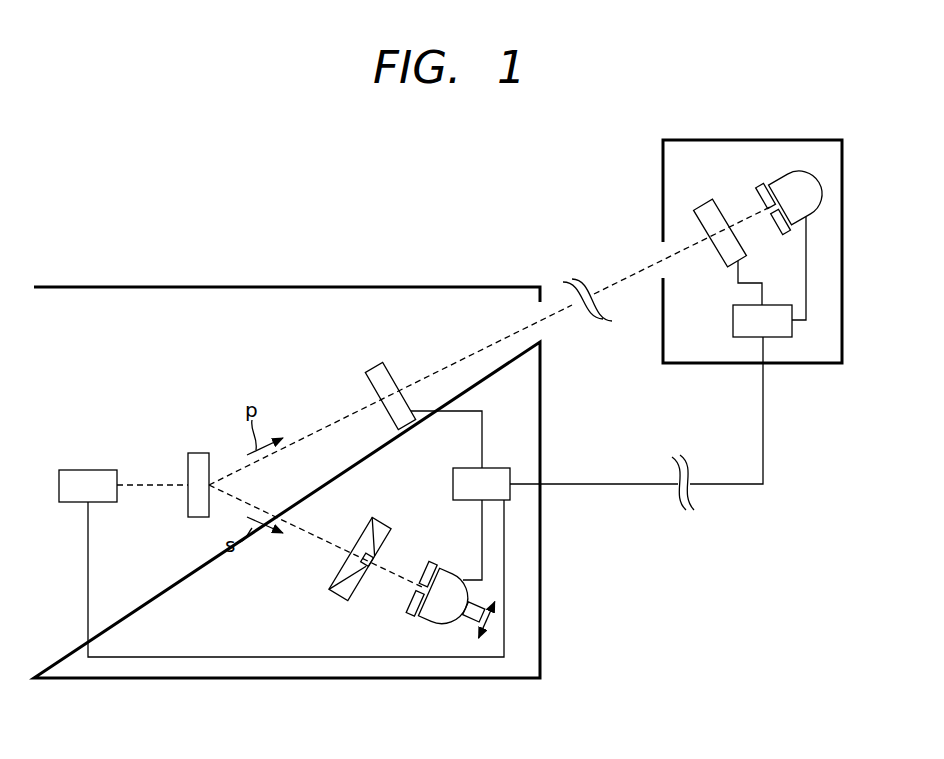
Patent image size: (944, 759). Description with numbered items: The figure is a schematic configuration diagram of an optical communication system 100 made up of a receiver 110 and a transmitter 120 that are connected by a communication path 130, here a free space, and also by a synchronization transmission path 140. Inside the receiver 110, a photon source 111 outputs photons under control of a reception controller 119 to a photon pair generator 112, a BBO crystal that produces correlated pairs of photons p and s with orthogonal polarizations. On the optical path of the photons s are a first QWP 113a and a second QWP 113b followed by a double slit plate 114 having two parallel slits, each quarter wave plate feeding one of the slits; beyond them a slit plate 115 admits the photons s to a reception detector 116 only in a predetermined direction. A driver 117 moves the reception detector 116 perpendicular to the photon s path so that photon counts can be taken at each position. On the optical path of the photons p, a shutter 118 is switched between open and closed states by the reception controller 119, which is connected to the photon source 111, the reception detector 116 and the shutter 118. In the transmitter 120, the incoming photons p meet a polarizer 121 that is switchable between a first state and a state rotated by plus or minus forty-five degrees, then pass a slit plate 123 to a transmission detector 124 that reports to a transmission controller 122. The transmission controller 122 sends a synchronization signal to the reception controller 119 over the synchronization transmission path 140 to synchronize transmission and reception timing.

The optical communication system 100 is at (65, 143).
The receiver 110 is at (121, 286).
The photon source 111 is at (98, 470).
The photon pair generator 112 is at (197, 453).
The first QWP 113a is at (332, 588).
The second QWP 113b is at (371, 518).
The double slit plate 114 is at (350, 600).
The slit plate 115 is at (409, 612).
The reception detector 116 is at (437, 623).
The driver 117 is at (477, 600).
The shutter 118 is at (373, 366).
The reception controller 119 is at (512, 473).
The transmitter 120 is at (763, 140).
The polarizer 121 is at (697, 206).
The transmission controller 122 is at (748, 338).
The slit plate 123 is at (760, 186).
The transmission detector 124 is at (800, 173).
The communication path 130 is at (611, 288).
The synchronization transmission path 140 is at (613, 486).